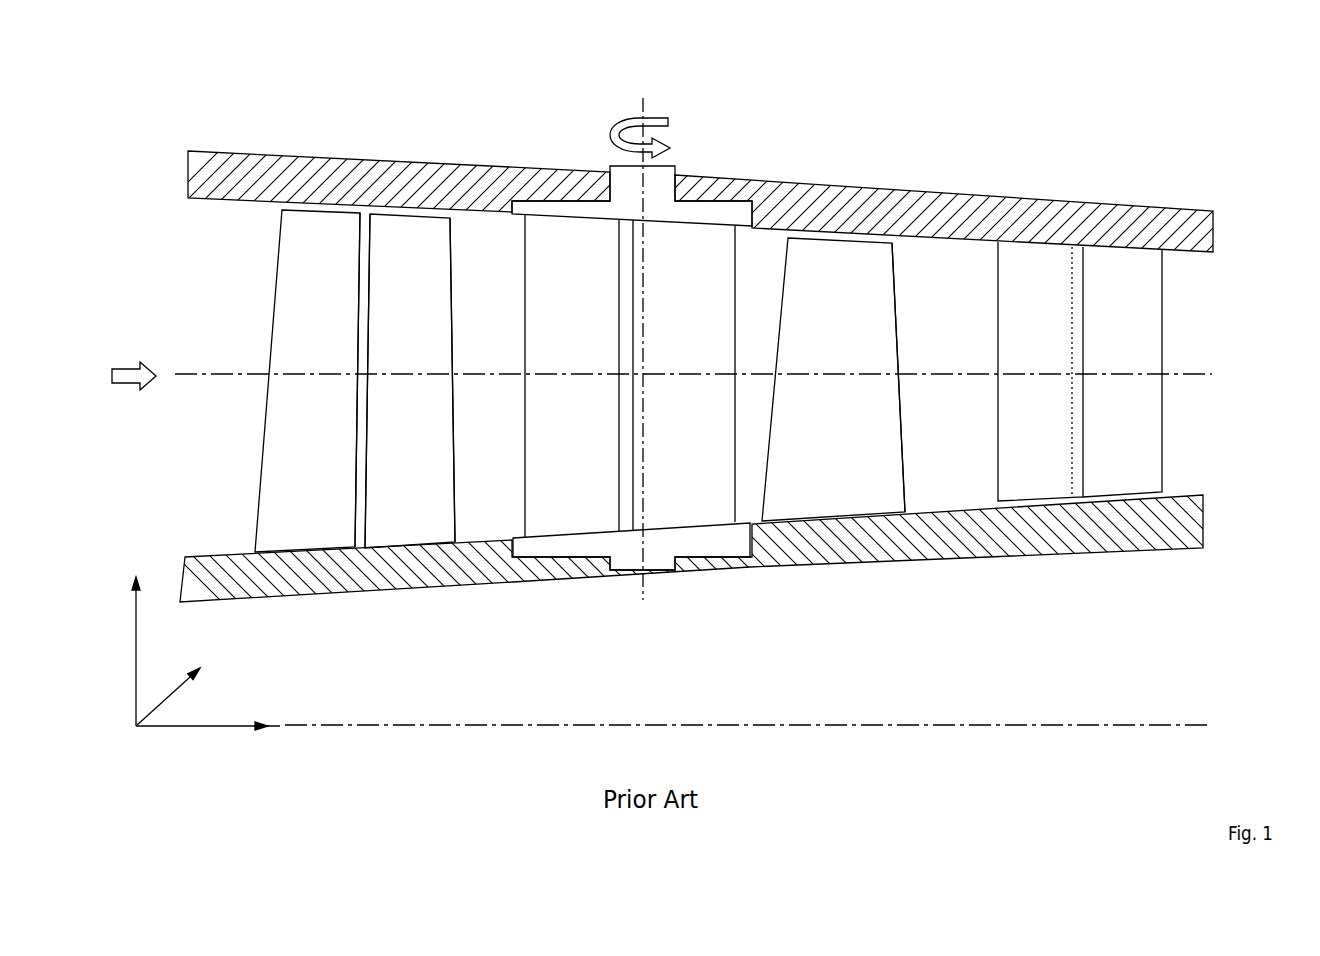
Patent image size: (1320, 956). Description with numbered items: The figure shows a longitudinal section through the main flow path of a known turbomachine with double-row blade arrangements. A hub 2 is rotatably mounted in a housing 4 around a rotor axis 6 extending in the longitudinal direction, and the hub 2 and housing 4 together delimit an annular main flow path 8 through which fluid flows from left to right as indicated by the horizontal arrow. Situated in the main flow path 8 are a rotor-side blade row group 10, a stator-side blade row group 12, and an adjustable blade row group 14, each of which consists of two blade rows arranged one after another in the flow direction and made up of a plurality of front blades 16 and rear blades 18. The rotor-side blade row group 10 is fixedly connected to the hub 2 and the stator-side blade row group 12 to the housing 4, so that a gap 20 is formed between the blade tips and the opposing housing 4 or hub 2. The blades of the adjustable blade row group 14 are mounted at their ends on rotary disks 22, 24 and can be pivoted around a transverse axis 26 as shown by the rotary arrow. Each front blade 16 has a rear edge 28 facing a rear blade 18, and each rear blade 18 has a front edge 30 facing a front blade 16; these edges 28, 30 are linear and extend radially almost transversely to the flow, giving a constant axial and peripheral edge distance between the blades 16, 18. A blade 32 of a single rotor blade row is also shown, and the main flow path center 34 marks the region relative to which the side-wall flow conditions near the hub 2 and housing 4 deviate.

The hub 2 is at (1172, 522).
The housing 4 is at (1202, 232).
The rotor axis 6 is at (1193, 722).
The main flow path 8 is at (1185, 430).
The rotor-side blade row group 10 is at (465, 210).
The stator-side blade row group 12 is at (1162, 277).
The adjustable blade row group 14 is at (743, 242).
The front blades 16 is at (322, 255).
The rear blades 18 is at (455, 225).
The gap 20 is at (407, 245).
The rotary disk 22 is at (703, 542).
The rotary disk 24 is at (665, 185).
The transverse axis 26 is at (645, 107).
The rear edge 28 is at (355, 495).
The front edge 30 is at (358, 467).
The blade 32 is at (897, 272).
The main flow path center 34 is at (1180, 374).